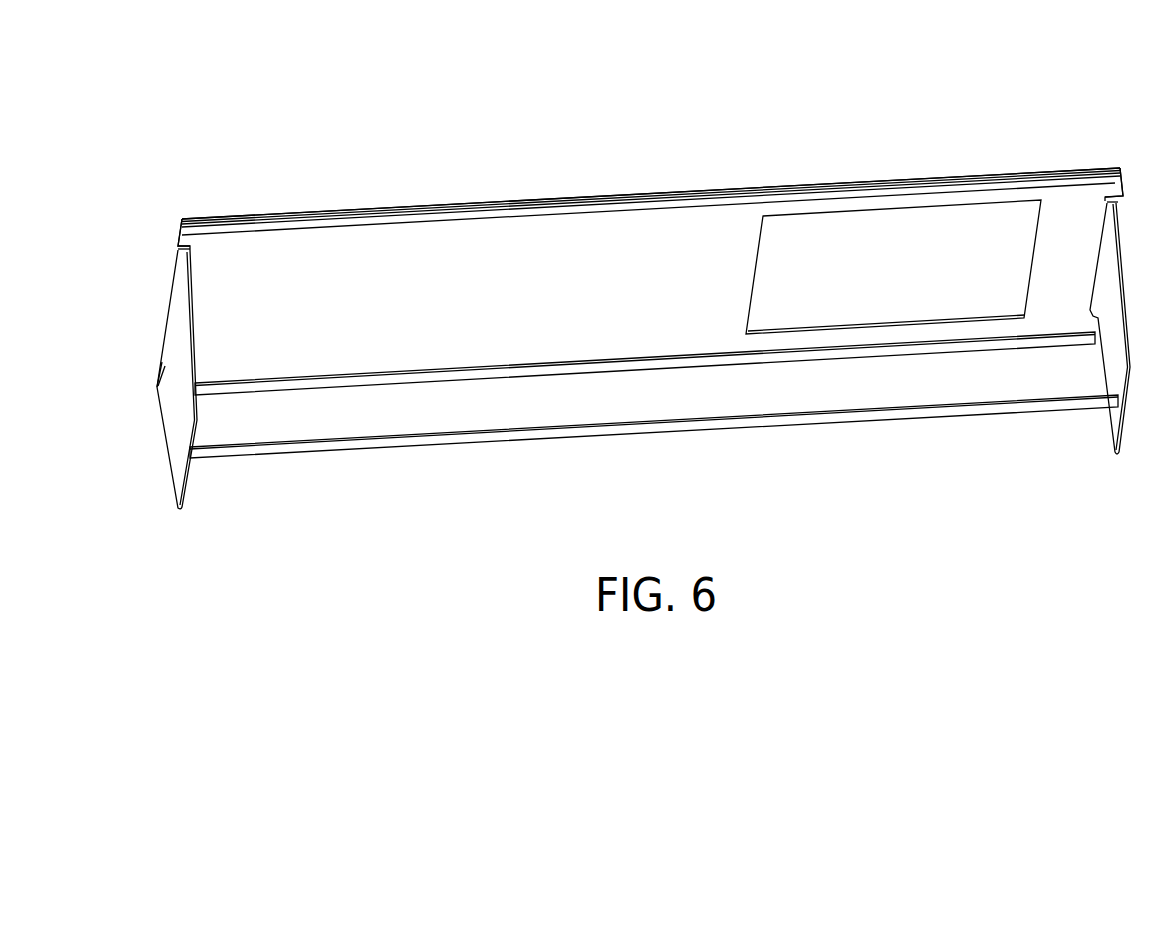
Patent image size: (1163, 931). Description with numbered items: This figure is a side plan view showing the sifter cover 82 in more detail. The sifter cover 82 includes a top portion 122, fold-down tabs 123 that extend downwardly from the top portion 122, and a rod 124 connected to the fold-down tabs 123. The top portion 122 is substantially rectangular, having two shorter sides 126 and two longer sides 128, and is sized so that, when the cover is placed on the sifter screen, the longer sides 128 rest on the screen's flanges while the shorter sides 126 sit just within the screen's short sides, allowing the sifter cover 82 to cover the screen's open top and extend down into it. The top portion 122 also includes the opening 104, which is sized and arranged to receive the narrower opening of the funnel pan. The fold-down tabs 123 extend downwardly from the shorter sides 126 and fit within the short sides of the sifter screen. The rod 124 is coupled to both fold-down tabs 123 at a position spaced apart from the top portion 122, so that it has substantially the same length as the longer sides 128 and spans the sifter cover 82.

The sifter cover 82 is at (758, 109).
The opening 104 is at (880, 212).
The top portion 122 is at (384, 250).
The fold-down tabs 123 is at (178, 428).
The rod 124 is at (683, 425).
The shorter sides 126 is at (182, 246).
The longer sides 128 is at (630, 198).